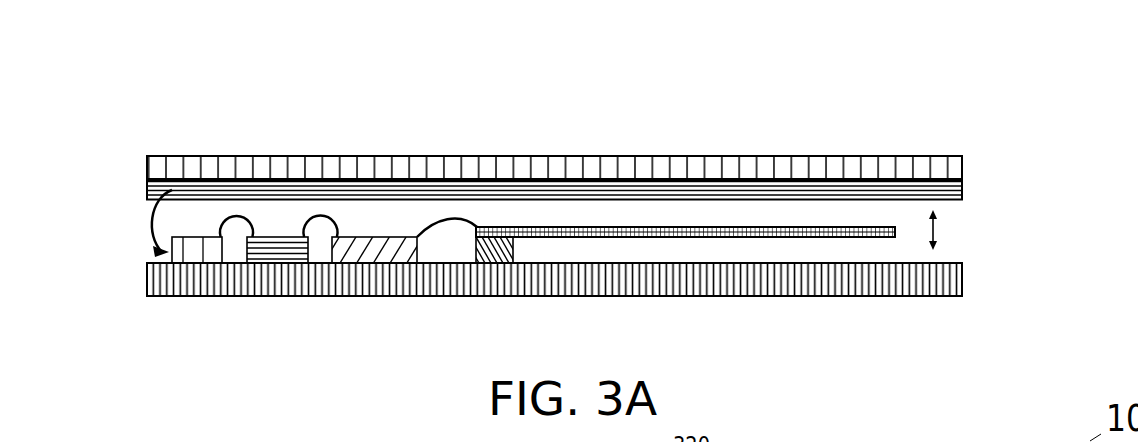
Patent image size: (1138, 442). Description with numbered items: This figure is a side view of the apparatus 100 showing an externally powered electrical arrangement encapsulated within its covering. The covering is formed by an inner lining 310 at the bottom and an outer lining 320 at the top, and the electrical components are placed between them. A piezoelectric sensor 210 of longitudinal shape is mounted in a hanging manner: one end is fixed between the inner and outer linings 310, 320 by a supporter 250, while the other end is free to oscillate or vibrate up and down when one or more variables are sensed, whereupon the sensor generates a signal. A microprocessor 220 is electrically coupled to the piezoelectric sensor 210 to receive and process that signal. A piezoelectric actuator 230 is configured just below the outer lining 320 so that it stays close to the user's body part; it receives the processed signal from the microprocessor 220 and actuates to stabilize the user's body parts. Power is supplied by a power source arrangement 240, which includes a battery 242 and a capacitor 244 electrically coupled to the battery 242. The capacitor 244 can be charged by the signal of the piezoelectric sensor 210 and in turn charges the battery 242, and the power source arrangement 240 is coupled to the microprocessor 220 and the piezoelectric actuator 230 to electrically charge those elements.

The apparatus 100 is at (582, 196).
The piezoelectric sensor 210 is at (740, 237).
The microprocessor 220 is at (370, 237).
The piezoelectric actuator 230 is at (962, 193).
The power source arrangement 240 is at (204, 278).
The battery 242 is at (285, 253).
The capacitor 244 is at (192, 253).
The supporter 250 is at (497, 240).
The inner lining 310 is at (970, 290).
The outer lining 320 is at (708, 152).